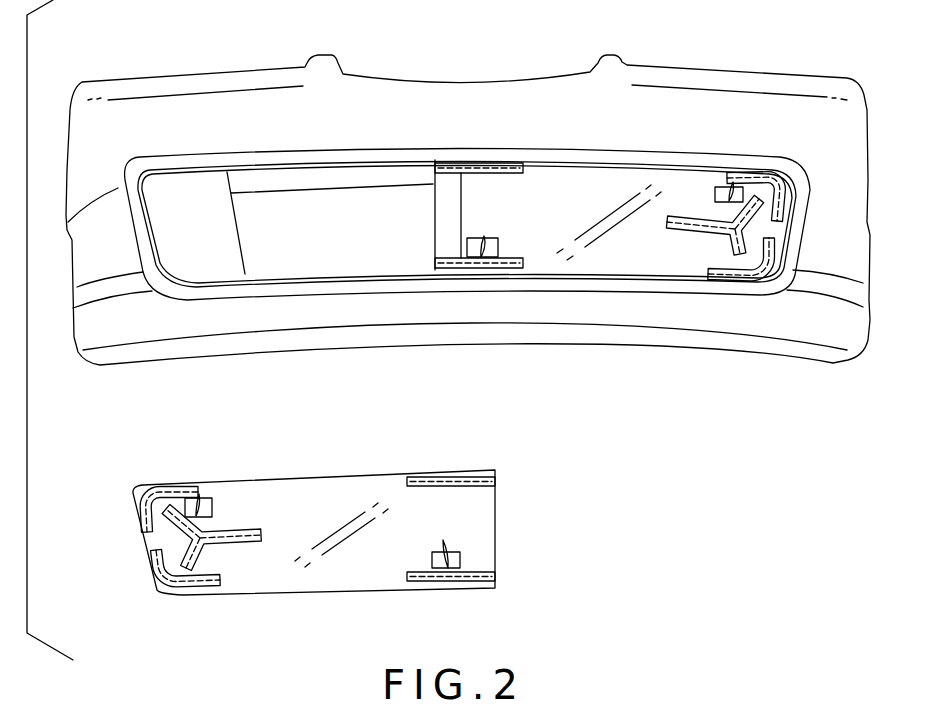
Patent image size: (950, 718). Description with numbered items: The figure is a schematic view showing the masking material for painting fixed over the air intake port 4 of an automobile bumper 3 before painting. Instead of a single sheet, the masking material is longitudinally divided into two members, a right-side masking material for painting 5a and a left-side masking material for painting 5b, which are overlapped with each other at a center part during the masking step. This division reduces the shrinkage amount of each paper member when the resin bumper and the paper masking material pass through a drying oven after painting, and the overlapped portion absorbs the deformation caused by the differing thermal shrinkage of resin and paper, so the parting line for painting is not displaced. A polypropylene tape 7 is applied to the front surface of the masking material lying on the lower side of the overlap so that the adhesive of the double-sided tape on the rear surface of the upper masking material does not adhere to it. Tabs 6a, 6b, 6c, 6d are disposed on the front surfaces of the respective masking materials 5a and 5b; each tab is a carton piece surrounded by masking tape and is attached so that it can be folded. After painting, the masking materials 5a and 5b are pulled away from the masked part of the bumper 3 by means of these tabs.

The automobile bumper 3 is at (787, 110).
The air intake port 4 is at (293, 210).
The right-side masking material for painting 5a is at (323, 493).
The left-side masking material for painting 5b is at (620, 187).
The tab 6a is at (200, 497).
The tab 6b is at (445, 540).
The tab 6c is at (485, 240).
The tab 6d is at (727, 187).
The polypropylene tape 7 is at (443, 200).